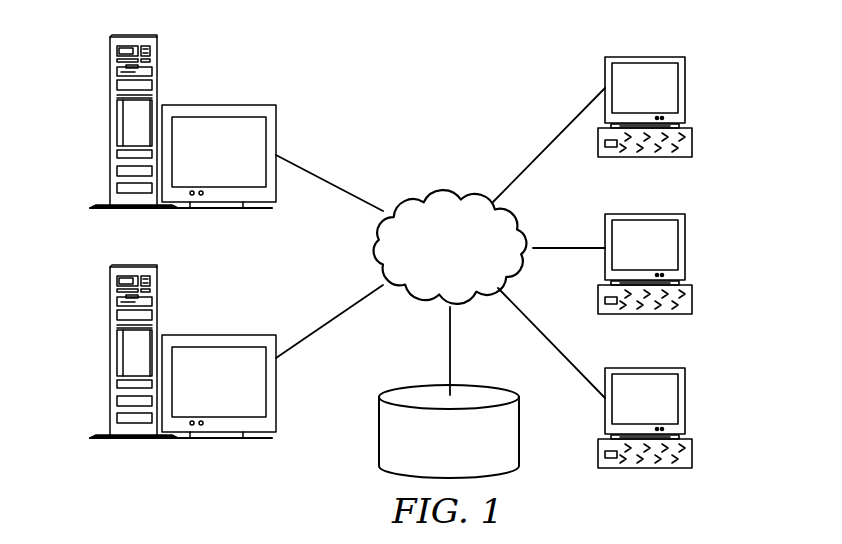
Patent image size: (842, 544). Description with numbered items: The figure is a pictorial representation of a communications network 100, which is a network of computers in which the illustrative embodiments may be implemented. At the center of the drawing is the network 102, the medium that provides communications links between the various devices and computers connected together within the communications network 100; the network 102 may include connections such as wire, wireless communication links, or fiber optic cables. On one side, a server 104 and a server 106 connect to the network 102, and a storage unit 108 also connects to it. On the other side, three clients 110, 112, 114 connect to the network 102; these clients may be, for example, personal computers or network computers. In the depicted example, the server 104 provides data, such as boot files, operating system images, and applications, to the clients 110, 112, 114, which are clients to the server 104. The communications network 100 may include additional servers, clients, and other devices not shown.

The communications network 100 is at (505, 78).
The network 102 is at (418, 193).
The server 104 is at (110, 125).
The server 106 is at (110, 355).
The storage unit 108 is at (378, 440).
The client 110 is at (685, 90).
The client 112 is at (685, 246).
The client 114 is at (685, 400).